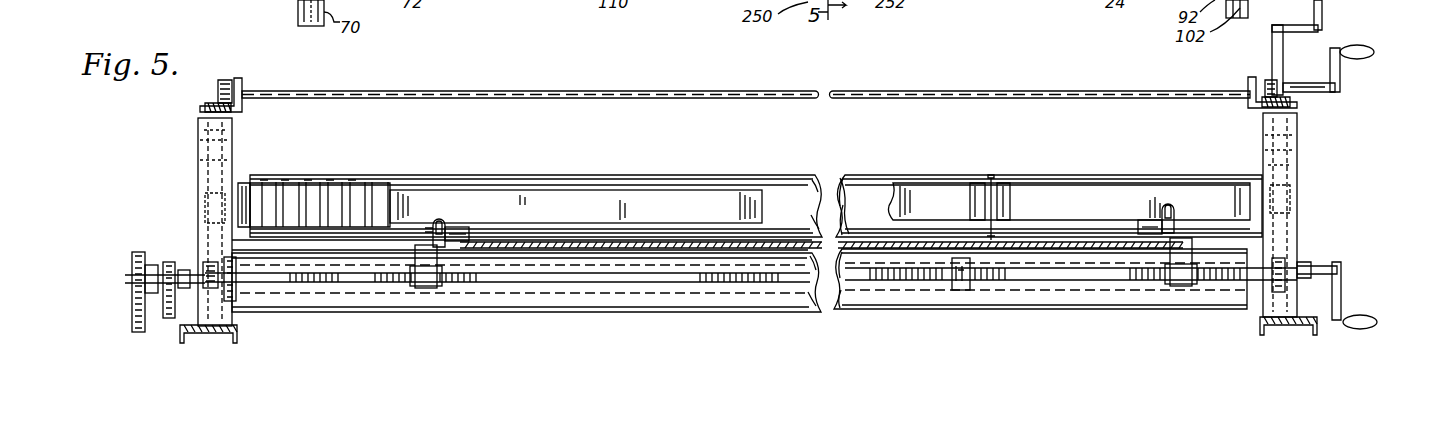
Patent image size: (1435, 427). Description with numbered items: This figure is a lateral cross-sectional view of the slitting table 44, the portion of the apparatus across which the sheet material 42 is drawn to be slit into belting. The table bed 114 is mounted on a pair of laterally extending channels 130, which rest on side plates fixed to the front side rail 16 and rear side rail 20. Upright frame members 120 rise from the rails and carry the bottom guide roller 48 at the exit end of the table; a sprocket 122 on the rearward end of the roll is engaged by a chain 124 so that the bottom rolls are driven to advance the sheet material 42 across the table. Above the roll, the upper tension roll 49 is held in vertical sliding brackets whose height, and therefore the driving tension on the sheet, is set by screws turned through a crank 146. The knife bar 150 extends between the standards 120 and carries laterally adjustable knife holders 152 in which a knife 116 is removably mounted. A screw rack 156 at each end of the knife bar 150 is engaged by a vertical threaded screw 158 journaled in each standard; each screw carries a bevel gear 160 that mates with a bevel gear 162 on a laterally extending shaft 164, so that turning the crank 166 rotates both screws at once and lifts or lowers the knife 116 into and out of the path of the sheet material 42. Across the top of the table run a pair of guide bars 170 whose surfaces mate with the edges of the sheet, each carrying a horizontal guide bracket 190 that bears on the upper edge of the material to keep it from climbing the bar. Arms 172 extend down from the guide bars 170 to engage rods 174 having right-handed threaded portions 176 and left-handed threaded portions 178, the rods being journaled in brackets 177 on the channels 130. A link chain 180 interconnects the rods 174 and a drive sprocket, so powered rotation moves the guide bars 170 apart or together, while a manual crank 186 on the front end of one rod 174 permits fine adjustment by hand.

The front side rail 16 is at (183, 335).
The rear side rail 20 is at (1273, 334).
The sheet material 42 is at (1059, 238).
The slitting table 44 is at (1316, 209).
The guide roller 48 is at (805, 262).
The upper tension roll 49 is at (788, 200).
The table bed 114 is at (392, 252).
The knife 116 is at (962, 226).
The upright frame member 120 is at (232, 165).
The sprocket 122 is at (151, 264).
The chain 124 is at (130, 326).
The laterally extending channel 130 is at (885, 288).
The crank 146 is at (1340, 70).
The knife bar 150 is at (589, 198).
The knife holder 152 is at (334, 190).
The screw rack 156 is at (214, 200).
The threaded screw 158 is at (198, 146).
The bevel gear 160 is at (204, 105).
The bevel gear 162 is at (222, 82).
The laterally extending shaft 164 is at (831, 90).
The crank 166 is at (1322, 32).
The guide bar 170 is at (445, 222).
The arm 172 is at (428, 288).
The rod 174 is at (700, 280).
The right-handed threaded portion 176 is at (1230, 282).
The bracket 177 is at (240, 290).
The left-handed threaded portion 178 is at (465, 282).
The link chain 180 is at (160, 311).
The manual crank 186 is at (1328, 276).
The horizontal guide bracket 190 is at (458, 228).